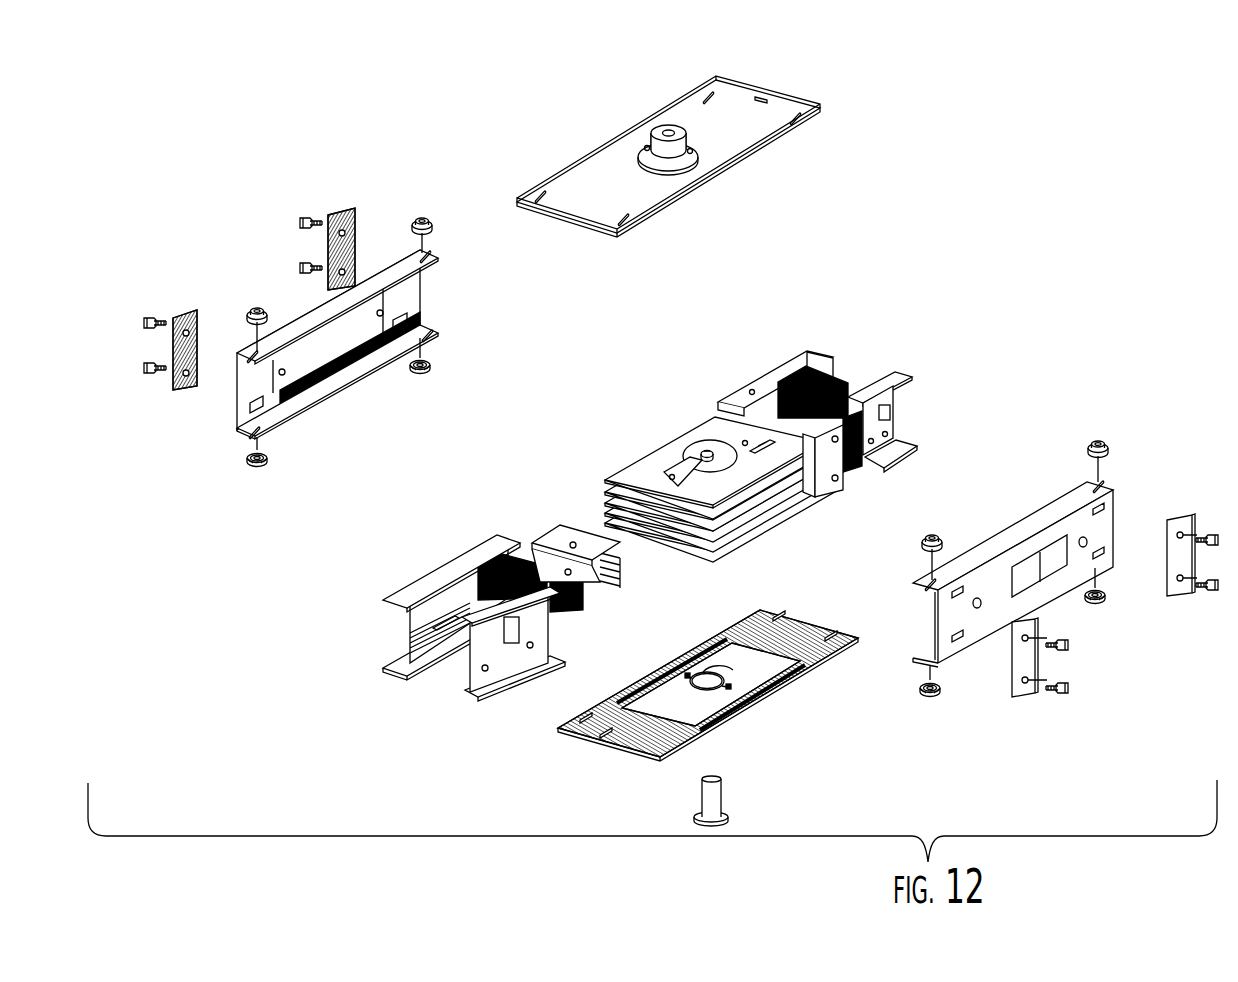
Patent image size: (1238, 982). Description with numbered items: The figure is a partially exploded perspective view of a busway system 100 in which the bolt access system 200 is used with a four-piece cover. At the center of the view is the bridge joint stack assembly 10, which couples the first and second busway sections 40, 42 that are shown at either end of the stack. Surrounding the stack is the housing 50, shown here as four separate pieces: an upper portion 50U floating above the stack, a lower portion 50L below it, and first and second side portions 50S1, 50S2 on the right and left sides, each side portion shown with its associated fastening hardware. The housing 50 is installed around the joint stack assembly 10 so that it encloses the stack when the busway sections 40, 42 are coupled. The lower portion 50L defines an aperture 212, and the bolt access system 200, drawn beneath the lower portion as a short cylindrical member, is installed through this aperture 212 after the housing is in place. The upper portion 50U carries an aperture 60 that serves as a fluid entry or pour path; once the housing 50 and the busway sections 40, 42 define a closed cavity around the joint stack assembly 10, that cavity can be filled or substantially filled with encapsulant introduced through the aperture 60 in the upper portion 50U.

The busway system 100 is at (958, 134).
The housing 50 is at (645, 78).
The upper portion 50U is at (680, 134).
The aperture 60 is at (621, 183).
The second side portion 50S2 is at (433, 314).
The bridge joint stack assembly 10 is at (655, 436).
The second busway section 42 is at (928, 457).
The first busway section 40 is at (540, 695).
The lower portion 50L is at (710, 721).
The aperture 212 is at (771, 692).
The bolt access system 200 is at (735, 822).
The first side portion 50S1 is at (1127, 513).